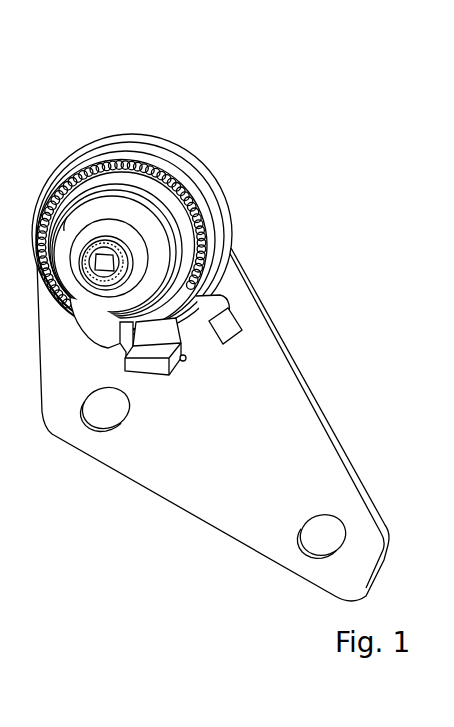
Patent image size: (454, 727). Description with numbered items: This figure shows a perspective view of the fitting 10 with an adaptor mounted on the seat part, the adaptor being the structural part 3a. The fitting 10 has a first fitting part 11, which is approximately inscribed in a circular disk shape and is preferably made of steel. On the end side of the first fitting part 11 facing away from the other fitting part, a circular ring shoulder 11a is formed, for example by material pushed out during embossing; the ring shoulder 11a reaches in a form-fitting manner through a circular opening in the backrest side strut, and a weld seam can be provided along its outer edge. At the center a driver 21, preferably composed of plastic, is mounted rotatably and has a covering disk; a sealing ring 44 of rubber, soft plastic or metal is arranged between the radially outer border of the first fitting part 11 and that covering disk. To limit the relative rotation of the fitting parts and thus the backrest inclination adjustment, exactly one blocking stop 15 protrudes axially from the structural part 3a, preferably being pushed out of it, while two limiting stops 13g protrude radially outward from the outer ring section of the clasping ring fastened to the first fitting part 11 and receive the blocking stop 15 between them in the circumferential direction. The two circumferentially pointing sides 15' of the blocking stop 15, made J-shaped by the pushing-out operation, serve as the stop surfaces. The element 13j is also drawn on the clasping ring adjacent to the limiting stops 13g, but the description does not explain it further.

The structural part 3a is at (293, 402).
The fitting 10 is at (163, 184).
The first fitting part 11 is at (187, 193).
The ring shoulder 11a is at (167, 266).
The sealing ring 44 is at (210, 250).
The driver 21 is at (117, 221).
The limiting stops 13g is at (105, 320).
The hook 13j is at (127, 353).
The blocking stop 15 is at (153, 373).
The sides of the blocking stop 15' is at (207, 384).